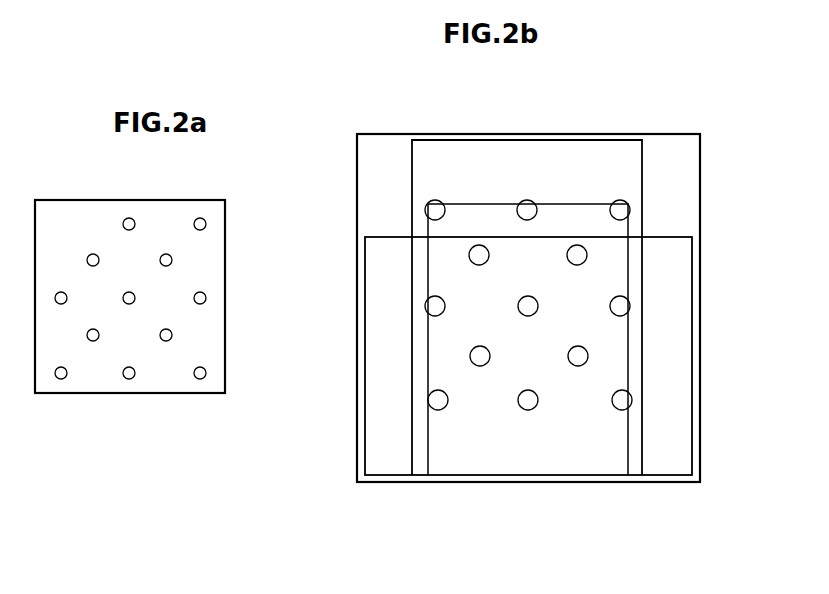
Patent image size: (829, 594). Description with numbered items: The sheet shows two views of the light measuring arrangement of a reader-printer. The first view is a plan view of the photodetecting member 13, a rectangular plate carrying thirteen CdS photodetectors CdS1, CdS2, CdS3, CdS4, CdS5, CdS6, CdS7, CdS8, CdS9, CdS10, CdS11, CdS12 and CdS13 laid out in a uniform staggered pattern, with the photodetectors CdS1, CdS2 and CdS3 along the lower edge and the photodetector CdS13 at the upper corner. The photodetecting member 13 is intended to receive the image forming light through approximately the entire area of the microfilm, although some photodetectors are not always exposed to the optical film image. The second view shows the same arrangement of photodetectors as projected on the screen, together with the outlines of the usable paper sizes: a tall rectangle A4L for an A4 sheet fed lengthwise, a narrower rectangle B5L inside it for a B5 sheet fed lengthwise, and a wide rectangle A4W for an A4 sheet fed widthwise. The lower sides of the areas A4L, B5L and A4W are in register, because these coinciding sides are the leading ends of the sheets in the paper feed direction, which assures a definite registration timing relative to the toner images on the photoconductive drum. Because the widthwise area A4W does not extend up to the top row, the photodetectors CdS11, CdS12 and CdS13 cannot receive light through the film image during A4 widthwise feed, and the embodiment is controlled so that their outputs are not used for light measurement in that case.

In FIG. 2A, the photodetecting member 13 is at (240, 265).
In FIG. 2A, the CdS photodetector CdS1 is at (59, 379).
In FIG. 2B, the CdS photodetector CdS1 is at (454, 413).
In FIG. 2A, the CdS photodetector CdS2 is at (129, 379).
In FIG. 2B, the CdS photodetector CdS2 is at (539, 413).
In FIG. 2A, the CdS photodetector CdS3 is at (206, 373).
In FIG. 2B, the CdS photodetector CdS3 is at (604, 413).
In FIG. 2B, the CdS photodetector CdS4 is at (487, 369).
In FIG. 2B, the CdS photodetector CdS5 is at (582, 369).
In FIG. 2B, the CdS photodetector CdS6 is at (453, 318).
In FIG. 2B, the CdS photodetector CdS7 is at (537, 318).
In FIG. 2B, the CdS photodetector CdS8 is at (607, 318).
In FIG. 2B, the CdS photodetector CdS9 is at (492, 267).
In FIG. 2B, the CdS photodetector CdS10 is at (586, 267).
In FIG. 2B, the CdS photodetector CdS11 is at (444, 202).
In FIG. 2B, the CdS photodetector CdS12 is at (534, 202).
In FIG. 2A, the CdS photodetector CdS13 is at (205, 220).
In FIG. 2B, the CdS photodetector CdS13 is at (616, 202).
In FIG. 2B, the A4 lengthwise feed paper area A4L is at (647, 157).
In FIG. 2B, the B5 lengthwise feed paper area B5L is at (630, 226).
In FIG. 2B, the A4 widthwise feed paper area A4W is at (715, 272).
In FIG. 2B, the element screen is at (585, 483).